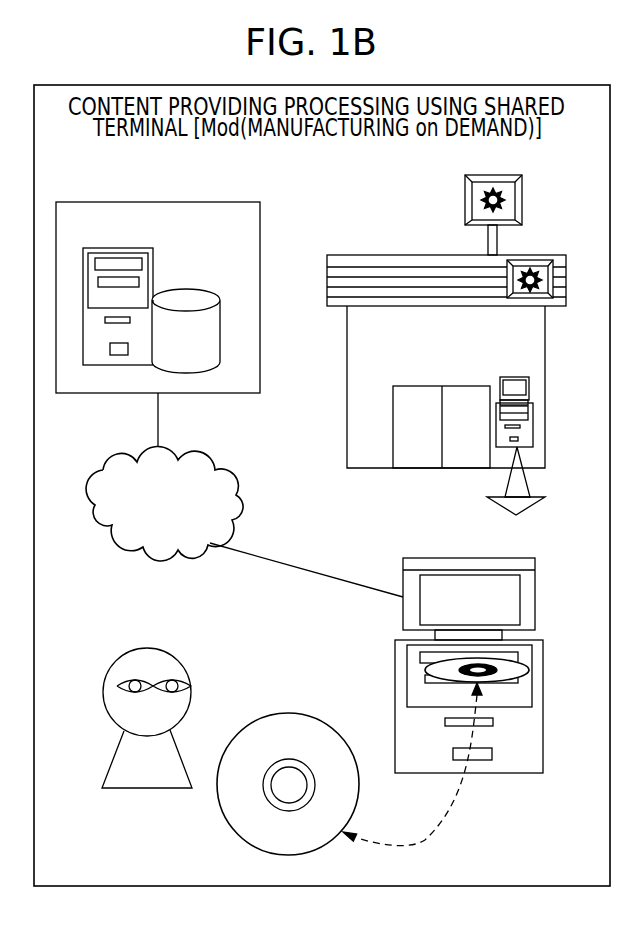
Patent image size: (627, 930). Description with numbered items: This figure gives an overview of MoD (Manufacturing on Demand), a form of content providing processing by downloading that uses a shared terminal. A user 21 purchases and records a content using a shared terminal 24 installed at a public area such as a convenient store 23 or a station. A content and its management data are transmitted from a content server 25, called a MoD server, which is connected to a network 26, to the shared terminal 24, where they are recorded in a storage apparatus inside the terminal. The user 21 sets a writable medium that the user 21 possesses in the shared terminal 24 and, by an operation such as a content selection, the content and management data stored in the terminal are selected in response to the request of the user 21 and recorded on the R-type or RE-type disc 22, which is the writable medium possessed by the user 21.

The user 21 is at (148, 648).
The disc 22 is at (290, 715).
The convenient store 23 is at (398, 255).
The shared terminal 24 is at (535, 593).
The content server 25 is at (260, 238).
The network 26 is at (240, 489).